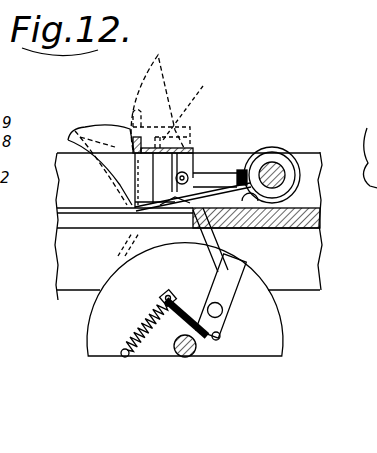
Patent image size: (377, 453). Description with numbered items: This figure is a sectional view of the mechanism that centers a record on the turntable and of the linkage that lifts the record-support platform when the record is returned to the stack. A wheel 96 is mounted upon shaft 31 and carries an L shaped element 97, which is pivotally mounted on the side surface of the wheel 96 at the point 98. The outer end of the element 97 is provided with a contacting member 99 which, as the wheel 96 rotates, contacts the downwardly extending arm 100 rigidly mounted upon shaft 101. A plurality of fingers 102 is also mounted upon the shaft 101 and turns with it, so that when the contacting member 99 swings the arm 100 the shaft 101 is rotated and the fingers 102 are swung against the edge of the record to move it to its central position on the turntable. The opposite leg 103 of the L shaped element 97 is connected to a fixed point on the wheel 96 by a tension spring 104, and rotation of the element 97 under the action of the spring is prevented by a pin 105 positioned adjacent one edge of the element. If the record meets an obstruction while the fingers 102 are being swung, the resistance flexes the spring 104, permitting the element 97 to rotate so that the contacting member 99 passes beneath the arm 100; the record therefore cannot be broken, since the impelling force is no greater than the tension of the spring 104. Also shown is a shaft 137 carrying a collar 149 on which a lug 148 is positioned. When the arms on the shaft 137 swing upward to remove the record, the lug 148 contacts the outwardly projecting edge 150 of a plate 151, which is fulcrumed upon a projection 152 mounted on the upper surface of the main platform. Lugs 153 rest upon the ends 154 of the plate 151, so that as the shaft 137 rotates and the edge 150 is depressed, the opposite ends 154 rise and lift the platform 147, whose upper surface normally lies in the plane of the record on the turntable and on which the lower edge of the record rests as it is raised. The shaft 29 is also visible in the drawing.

The fingers 102 is at (160, 82).
The platform 147 is at (193, 148).
The lug 148 is at (238, 163).
The shaft 101 is at (193, 173).
The shaft 137 is at (282, 165).
The shaft 29 is at (361, 149).
The lugs 153 is at (207, 162).
The ends of plate 154 is at (57, 211).
The plate 151 is at (152, 224).
The collar 149 is at (284, 189).
The outwardly projecting edge 150 is at (318, 217).
The projection 152 is at (149, 242).
The downwardly extending arm 100 is at (117, 253).
The contacting member 99 is at (245, 254).
The pivotal mounting 98 is at (197, 308).
The opposite leg 103 is at (176, 292).
The L shaped element 97 is at (233, 297).
The wheel 96 is at (267, 321).
The tension spring 104 is at (145, 320).
The shaft 31 is at (191, 353).
The pin 105 is at (219, 339).